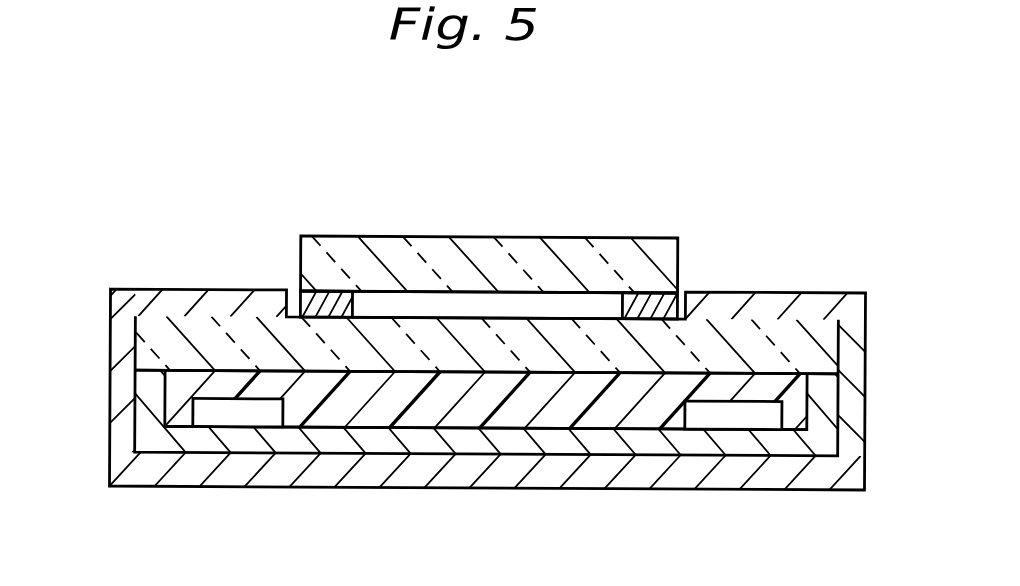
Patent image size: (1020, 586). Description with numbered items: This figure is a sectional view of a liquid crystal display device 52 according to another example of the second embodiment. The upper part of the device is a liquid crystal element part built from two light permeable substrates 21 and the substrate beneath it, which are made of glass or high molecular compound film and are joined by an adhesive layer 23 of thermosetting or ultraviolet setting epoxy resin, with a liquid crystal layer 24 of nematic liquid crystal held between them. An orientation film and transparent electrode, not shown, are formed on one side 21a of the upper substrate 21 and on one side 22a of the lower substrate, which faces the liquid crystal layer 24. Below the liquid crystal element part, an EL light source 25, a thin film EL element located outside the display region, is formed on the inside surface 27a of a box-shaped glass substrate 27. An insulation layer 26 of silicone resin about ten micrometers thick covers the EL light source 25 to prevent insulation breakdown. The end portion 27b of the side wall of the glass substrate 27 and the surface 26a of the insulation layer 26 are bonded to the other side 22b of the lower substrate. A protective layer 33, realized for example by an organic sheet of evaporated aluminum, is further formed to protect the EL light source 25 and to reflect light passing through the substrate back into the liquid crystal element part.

The liquid crystal display device 52 is at (470, 154).
The substrate 21 is at (372, 270).
The one side of substrate 21a is at (457, 290).
The adhesive layer 23 is at (326, 308).
The liquid crystal layer 24 is at (543, 303).
The one side of substrate 22a is at (182, 317).
The other side of substrate 22b is at (353, 373).
The EL light source 25 is at (233, 420).
The insulation layer 26 is at (433, 414).
The surface of insulation layer 26a is at (517, 372).
The glass substrate 27 is at (573, 447).
The inside surface of glass substrate 27a is at (645, 426).
The end portion of side wall 27b is at (150, 367).
The protective layer 33 is at (808, 477).